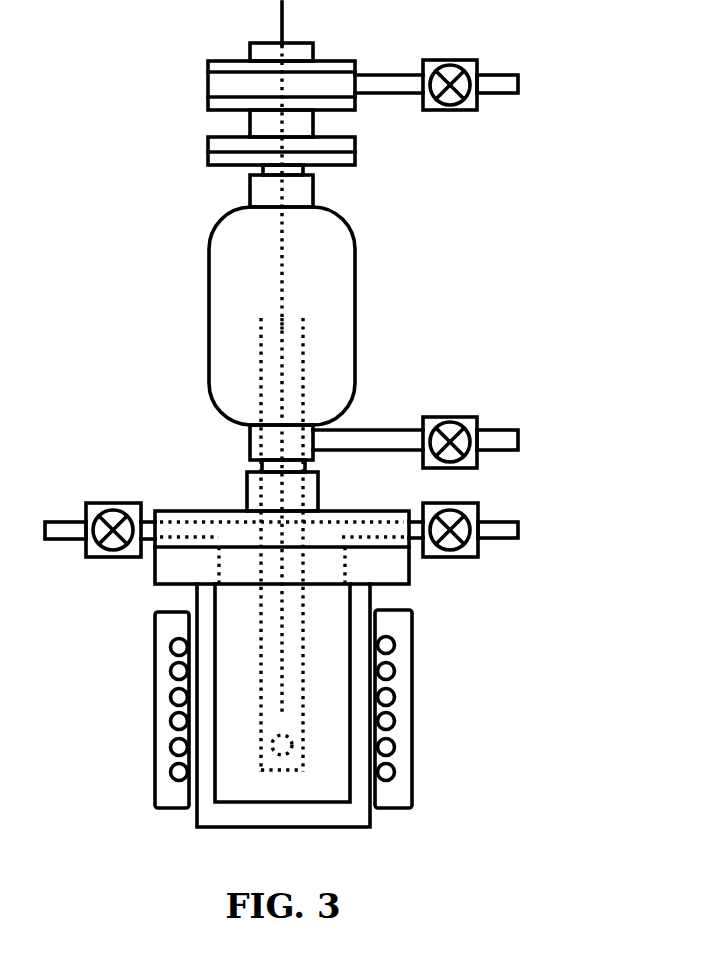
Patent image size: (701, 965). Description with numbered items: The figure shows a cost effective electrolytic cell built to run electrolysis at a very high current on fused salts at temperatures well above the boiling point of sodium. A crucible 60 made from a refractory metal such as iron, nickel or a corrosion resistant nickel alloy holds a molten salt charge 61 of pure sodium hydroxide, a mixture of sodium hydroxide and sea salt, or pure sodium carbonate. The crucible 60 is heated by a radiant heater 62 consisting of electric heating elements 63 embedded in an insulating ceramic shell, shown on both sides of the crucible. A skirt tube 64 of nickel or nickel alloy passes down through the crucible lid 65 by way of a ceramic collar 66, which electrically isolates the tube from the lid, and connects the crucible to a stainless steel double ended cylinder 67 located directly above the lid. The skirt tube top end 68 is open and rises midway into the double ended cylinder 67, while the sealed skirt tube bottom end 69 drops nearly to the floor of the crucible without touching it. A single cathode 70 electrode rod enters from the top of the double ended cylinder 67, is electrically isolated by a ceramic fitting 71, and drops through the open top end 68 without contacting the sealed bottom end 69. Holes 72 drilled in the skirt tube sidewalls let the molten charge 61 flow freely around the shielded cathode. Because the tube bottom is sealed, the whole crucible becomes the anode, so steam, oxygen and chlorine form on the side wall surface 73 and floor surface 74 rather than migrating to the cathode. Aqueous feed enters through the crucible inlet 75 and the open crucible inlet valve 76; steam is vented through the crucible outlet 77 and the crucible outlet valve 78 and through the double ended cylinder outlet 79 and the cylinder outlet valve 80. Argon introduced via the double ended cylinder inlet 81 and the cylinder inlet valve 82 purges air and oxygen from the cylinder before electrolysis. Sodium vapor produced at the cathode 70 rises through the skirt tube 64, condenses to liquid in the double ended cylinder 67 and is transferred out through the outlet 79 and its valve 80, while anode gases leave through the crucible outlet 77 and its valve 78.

The crucible 60 is at (196, 599).
The molten salt charge 61 is at (317, 683).
The radiant heater 62 is at (154, 638).
The electric heating elements 63 is at (171, 673).
The skirt tube 64 is at (260, 362).
The crucible lid 65 is at (382, 510).
The ceramic collar 66 is at (246, 470).
The double ended cylinder 67 is at (208, 252).
The skirt tube top end 68 is at (292, 316).
The skirt tube bottom end 69 is at (276, 768).
The cathode electrode rod 70 is at (279, 33).
The ceramic fitting 71 is at (249, 125).
The holes 72 is at (299, 745).
The side wall surface 73 is at (354, 782).
The floor surface 74 is at (280, 800).
The crucible inlet 75 is at (59, 520).
The valve 1 76 is at (111, 501).
The crucible outlet 77 is at (500, 540).
The valve 2 78 is at (450, 559).
The double ended cylinder outlet 79 is at (500, 428).
The valve 3 80 is at (450, 415).
The double ended cylinder inlet 81 is at (503, 95).
The valve 4 82 is at (450, 112).